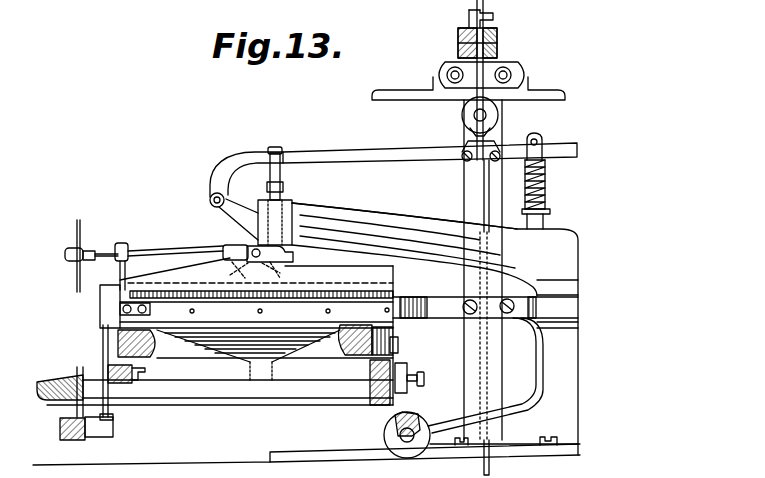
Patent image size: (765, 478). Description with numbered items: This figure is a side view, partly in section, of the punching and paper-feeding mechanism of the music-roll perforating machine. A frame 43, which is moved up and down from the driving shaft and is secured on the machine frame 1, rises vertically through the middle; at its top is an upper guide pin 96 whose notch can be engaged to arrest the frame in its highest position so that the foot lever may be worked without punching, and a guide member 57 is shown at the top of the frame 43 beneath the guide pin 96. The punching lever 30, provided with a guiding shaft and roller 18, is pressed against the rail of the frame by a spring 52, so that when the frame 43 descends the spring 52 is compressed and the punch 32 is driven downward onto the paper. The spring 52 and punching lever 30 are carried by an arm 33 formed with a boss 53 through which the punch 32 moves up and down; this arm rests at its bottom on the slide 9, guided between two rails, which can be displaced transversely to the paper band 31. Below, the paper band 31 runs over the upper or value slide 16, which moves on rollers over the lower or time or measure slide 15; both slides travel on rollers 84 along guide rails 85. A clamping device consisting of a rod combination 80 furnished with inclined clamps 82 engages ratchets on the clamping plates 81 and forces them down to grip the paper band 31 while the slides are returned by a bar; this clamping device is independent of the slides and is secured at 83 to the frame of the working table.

The machine frame 1 is at (190, 465).
The slide 9 is at (520, 446).
The lower or time or measure slide 15 is at (425, 378).
The upper or value slide 16 is at (400, 342).
The guiding shaft and roller 18 is at (498, 116).
The punching lever 30 is at (425, 148).
The paper band 31 is at (246, 293).
The punch 32 is at (245, 249).
The arm 33 is at (390, 222).
The frame 43 is at (480, 178).
The spring 52 is at (547, 188).
The boss 53 is at (294, 196).
The guide plate 57 is at (519, 70).
The rod combination 80 is at (97, 256).
The clamping plates 81 is at (150, 268).
The inclined clamps 82 is at (285, 257).
The securing point 83 is at (114, 428).
The rollers 84 is at (105, 360).
The guide rails 85 is at (385, 418).
The upper guide pin 96 is at (484, 10).